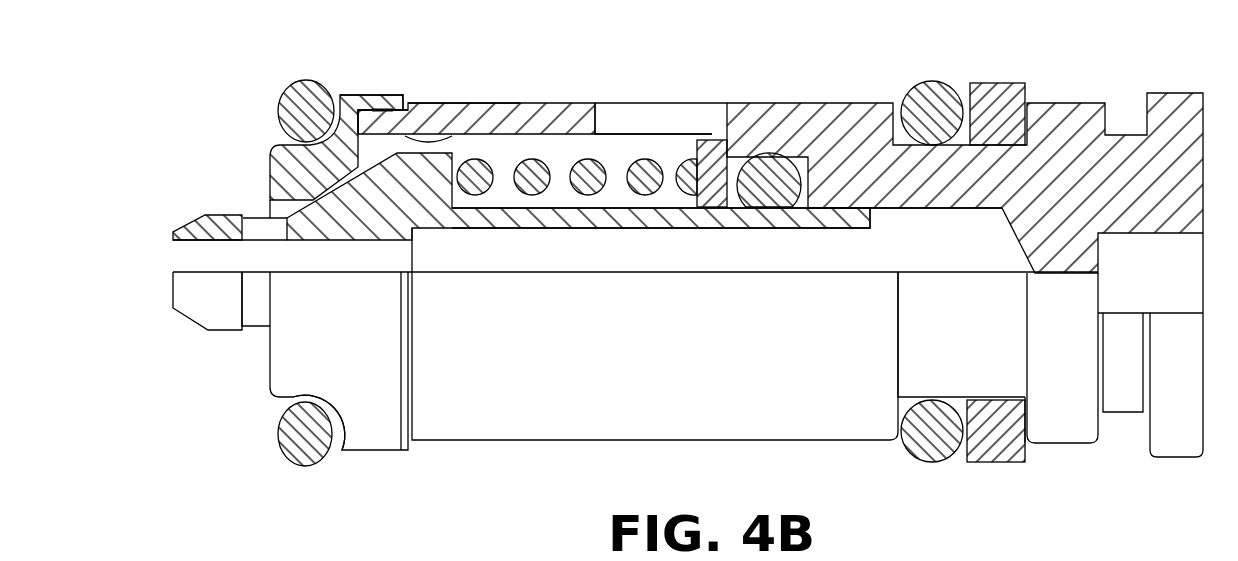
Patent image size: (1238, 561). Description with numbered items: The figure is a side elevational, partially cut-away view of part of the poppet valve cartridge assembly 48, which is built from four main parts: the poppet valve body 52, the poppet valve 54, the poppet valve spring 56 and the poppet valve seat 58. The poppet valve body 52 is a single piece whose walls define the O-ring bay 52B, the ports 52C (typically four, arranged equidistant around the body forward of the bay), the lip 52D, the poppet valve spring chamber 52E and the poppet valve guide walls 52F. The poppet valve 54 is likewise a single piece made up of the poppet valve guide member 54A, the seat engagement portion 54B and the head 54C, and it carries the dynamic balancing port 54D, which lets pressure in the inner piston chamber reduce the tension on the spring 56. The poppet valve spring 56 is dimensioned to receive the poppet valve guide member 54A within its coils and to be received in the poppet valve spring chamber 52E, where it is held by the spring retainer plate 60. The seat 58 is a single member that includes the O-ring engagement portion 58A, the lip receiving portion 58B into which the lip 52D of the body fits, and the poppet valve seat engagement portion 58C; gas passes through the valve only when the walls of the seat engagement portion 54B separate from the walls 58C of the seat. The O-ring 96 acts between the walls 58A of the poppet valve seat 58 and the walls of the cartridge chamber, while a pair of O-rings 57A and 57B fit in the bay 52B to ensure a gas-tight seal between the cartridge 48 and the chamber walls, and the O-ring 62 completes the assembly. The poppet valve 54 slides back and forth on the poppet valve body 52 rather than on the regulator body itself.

The poppet valve cartridge assembly 48 is at (640, 135).
The poppet valve body 52 is at (864, 92).
The O-ring bay 52B is at (900, 403).
The ports 52C is at (622, 112).
The lip 52D is at (357, 97).
The poppet valve spring chamber 52E is at (465, 103).
The poppet valve guide walls 52F is at (898, 209).
The poppet valve 54 is at (480, 238).
The poppet valve guide member 54A is at (705, 228).
The seat engagement portion 54B is at (268, 218).
The head 54C is at (188, 318).
The dynamic balancing port 54D is at (240, 214).
The poppet valve spring 56 is at (514, 172).
The O-ring 57A is at (928, 463).
The O-ring 57B is at (1003, 465).
The poppet valve seat 58 is at (353, 458).
The O-ring engagement portion 58A is at (293, 400).
The lip receiving portion 58B is at (380, 95).
The poppet valve seat engagement portion 58C is at (269, 157).
The spring retainer plate 60 is at (710, 138).
The O-ring 62 is at (759, 198).
The O-ring 96 is at (287, 462).